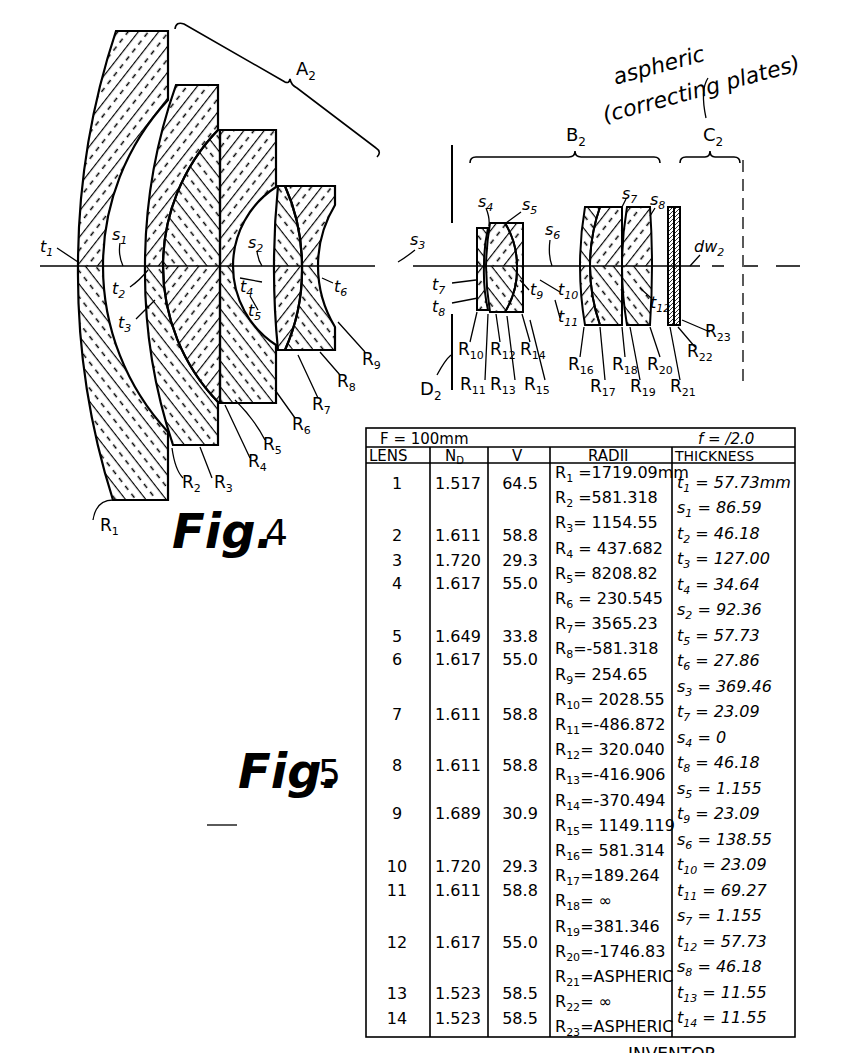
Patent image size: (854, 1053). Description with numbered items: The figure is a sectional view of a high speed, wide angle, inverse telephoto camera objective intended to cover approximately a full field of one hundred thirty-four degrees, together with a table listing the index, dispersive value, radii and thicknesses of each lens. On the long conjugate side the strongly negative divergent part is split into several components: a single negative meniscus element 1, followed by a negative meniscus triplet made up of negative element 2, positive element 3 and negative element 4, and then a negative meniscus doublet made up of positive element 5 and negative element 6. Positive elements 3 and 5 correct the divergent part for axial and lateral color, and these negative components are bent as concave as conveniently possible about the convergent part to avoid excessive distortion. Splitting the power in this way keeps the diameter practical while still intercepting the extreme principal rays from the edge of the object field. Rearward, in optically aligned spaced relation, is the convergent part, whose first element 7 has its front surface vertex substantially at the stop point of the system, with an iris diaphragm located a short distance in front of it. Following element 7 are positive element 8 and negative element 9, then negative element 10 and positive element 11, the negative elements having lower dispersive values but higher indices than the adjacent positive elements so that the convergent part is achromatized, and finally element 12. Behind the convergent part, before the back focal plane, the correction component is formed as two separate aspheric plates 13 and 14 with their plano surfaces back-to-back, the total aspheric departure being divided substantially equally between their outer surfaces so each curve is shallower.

The negative meniscus element 1 is at (169, 44).
The negative element 2 is at (200, 86).
The positive element 3 is at (222, 130).
The negative element 4 is at (276, 132).
The positive element 5 is at (295, 186).
The negative element 6 is at (340, 186).
The lens element 7 is at (478, 228).
The positive element 8 is at (500, 223).
The negative element 9 is at (510, 223).
The negative element 10 is at (595, 207).
The positive element 11 is at (612, 207).
The lens element 12 is at (640, 207).
The aspheric plate 13 is at (672, 207).
The aspheric plate 14 is at (678, 207).